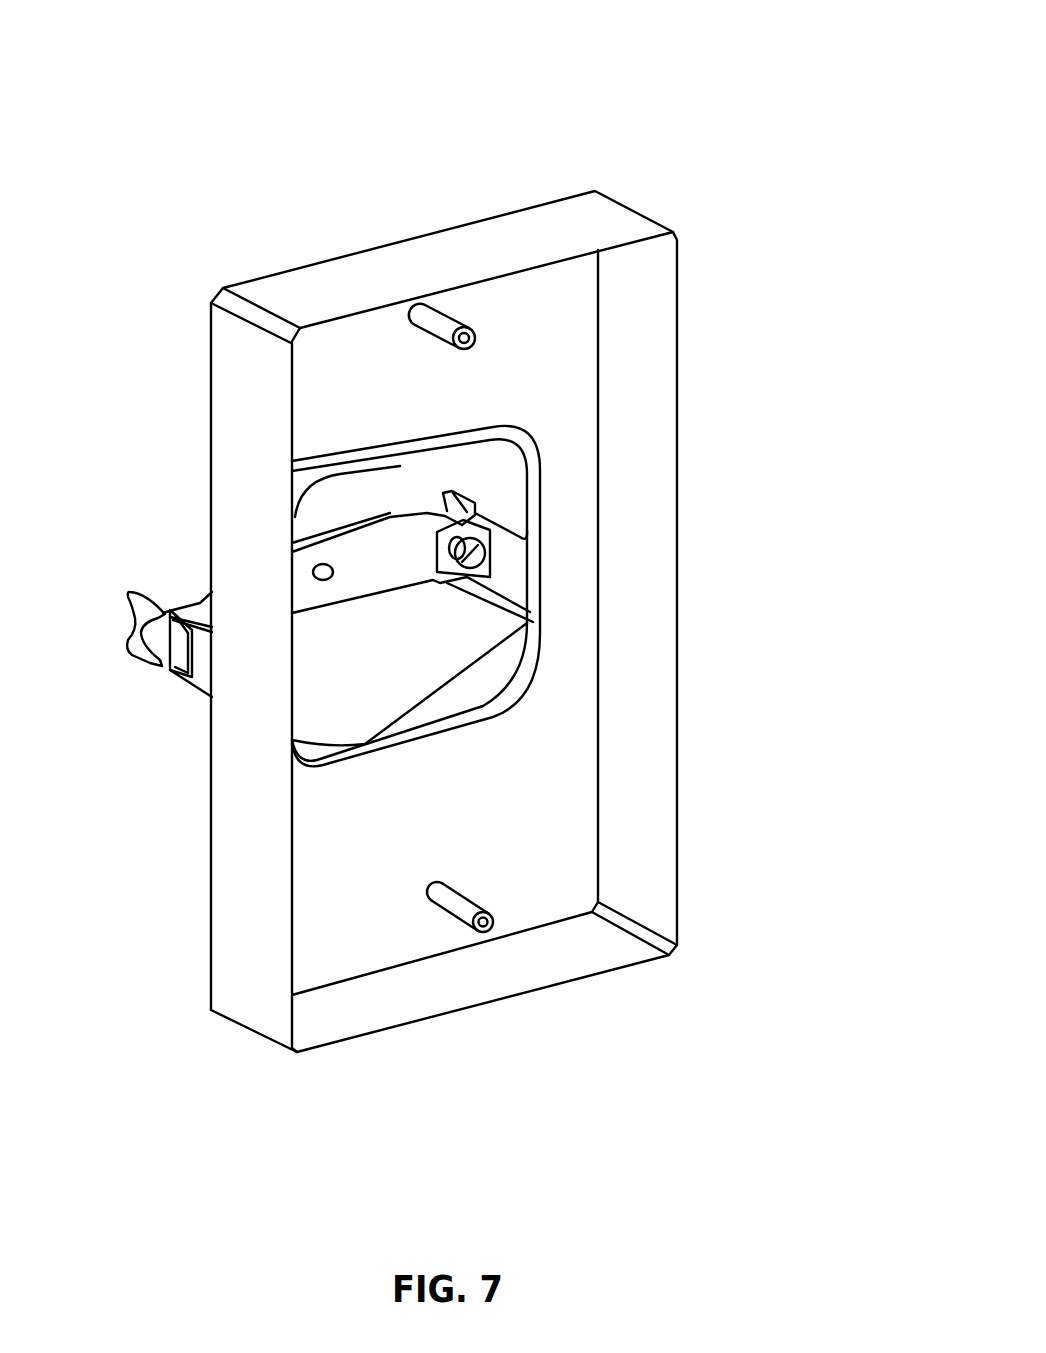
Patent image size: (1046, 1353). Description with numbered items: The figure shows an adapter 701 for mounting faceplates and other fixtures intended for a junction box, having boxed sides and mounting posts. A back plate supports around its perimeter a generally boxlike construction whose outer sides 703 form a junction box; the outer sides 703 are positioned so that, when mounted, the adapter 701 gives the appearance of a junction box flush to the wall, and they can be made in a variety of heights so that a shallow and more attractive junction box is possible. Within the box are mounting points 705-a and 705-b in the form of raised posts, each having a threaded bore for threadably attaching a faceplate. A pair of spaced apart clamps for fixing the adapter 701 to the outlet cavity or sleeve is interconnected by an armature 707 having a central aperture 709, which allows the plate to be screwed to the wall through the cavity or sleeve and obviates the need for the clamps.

The switch assembly 701 is at (652, 157).
The outer sides 703 is at (405, 260).
The mounting point 705-a is at (452, 315).
The mounting point 705-b is at (455, 910).
The armature 707 is at (353, 527).
The central aperture 709 is at (342, 573).